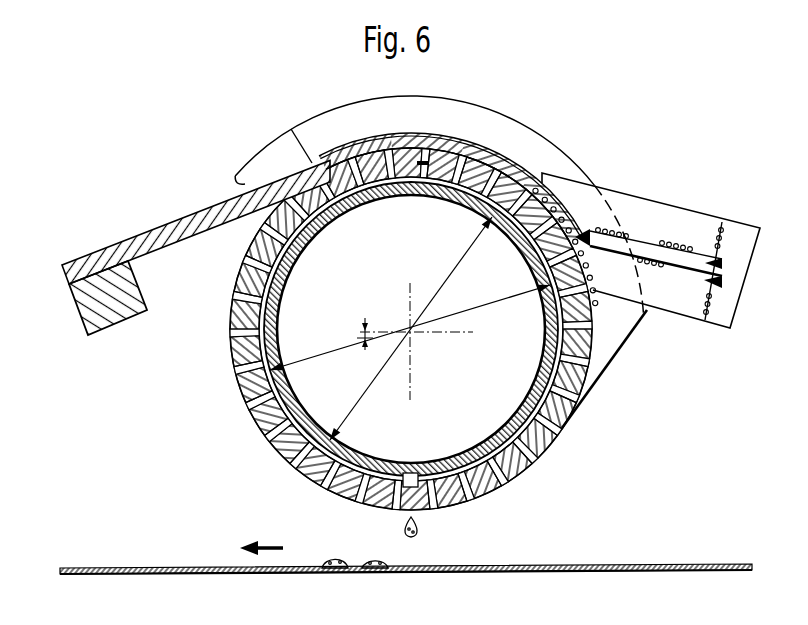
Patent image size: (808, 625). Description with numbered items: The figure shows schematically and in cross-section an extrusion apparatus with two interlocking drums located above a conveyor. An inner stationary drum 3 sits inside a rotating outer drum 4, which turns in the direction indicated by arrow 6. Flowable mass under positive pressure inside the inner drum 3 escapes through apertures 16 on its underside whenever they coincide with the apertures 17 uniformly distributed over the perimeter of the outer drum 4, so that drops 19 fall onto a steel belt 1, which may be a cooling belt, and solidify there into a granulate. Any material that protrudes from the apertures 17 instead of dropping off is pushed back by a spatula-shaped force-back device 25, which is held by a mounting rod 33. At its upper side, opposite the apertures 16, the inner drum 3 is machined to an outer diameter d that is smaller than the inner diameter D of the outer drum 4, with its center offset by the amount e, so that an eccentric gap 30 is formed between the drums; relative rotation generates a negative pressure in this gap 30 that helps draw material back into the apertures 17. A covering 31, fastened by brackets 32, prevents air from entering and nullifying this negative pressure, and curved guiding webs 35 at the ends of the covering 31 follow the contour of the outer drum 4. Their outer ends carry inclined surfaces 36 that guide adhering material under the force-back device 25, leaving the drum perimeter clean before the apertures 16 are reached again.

The steel belt 1 is at (590, 572).
The inner stationary drum 3 is at (296, 435).
The outer drum 4 is at (411, 344).
The arrow indicating direction of rotation 6 is at (412, 168).
The apertures of the inner drum 16 is at (415, 474).
The apertures of the outer drum 17 is at (381, 196).
The drops 19 is at (338, 558).
The spatula-shaped force-back device 25 is at (187, 222).
The eccentric gap 30 is at (360, 158).
The covering 31 is at (465, 148).
The brackets 32 is at (658, 222).
The mounting rod 33 is at (120, 307).
The curved guiding webs 35 is at (457, 123).
The inclined surfaces 36 is at (274, 150).
The inner diameter of the outer drum D is at (411, 328).
The outer diameter of the inner drum d is at (410, 328).
The eccentricity amount e is at (366, 332).